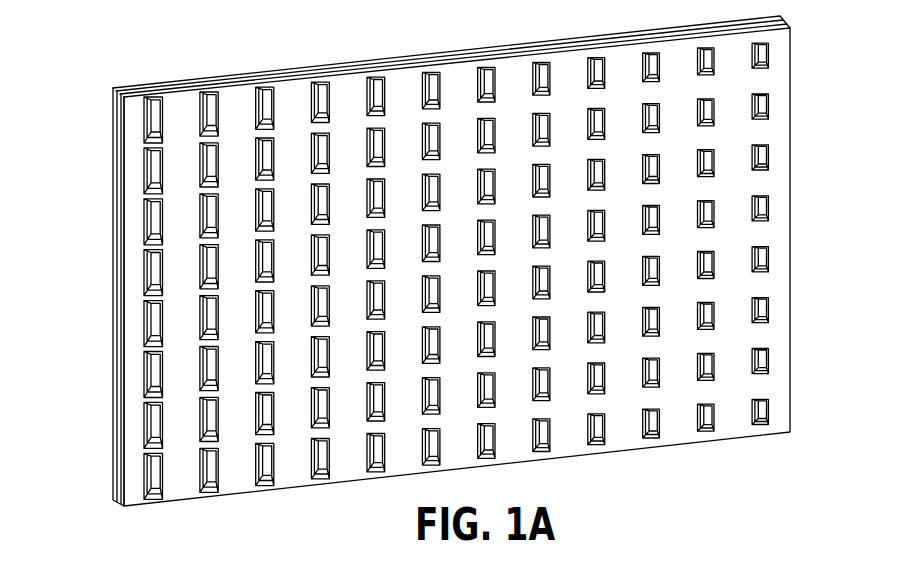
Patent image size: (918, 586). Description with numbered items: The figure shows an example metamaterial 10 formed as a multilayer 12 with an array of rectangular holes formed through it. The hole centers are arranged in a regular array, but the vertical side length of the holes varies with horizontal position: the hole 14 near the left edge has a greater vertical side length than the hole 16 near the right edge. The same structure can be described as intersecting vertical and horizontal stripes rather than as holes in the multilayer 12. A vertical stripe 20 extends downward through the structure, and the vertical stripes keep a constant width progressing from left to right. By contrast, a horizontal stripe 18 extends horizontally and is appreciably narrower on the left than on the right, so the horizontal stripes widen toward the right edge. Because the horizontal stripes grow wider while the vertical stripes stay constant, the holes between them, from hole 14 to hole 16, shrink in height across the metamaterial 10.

The metamaterial 10 is at (96, 44).
The multilayer 12 is at (120, 155).
The hole 14 is at (150, 110).
The hole 16 is at (773, 55).
The horizontal stripe 18 is at (762, 183).
The vertical stripe 20 is at (567, 68).